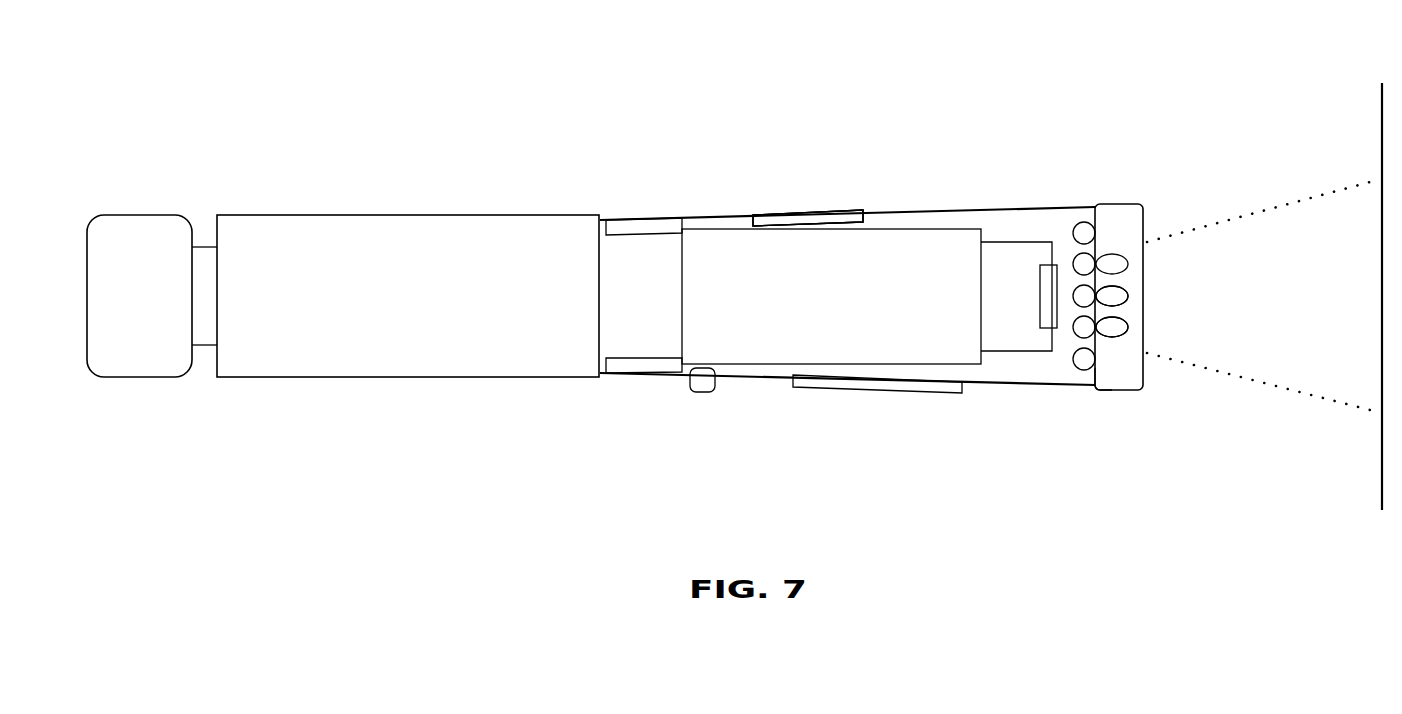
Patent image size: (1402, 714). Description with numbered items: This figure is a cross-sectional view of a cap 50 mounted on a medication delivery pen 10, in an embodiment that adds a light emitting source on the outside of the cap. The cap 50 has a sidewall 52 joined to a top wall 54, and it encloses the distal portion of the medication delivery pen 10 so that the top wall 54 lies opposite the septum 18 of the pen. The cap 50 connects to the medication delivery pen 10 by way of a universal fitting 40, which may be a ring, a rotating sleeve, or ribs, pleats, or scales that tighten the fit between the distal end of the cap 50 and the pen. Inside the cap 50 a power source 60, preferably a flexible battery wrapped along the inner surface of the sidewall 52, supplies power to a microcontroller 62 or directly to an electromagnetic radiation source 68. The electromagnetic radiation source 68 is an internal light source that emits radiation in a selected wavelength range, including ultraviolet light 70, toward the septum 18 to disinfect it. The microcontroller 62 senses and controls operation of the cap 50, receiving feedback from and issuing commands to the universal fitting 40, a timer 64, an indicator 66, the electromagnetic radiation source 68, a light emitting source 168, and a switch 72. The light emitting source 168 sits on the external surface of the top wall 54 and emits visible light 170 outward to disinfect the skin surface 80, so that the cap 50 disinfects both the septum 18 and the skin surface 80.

The medication delivery pen 10 is at (314, 110).
The septum 18 is at (1050, 283).
The universal fitting 40 is at (660, 223).
The cap 50 is at (1110, 382).
The sidewall 52 is at (1052, 388).
The top wall 54 is at (1107, 357).
The power source 60 is at (798, 220).
The microcontroller 62 is at (808, 218).
The timer 64 is at (808, 218).
The indicator 66 is at (862, 385).
The electromagnetic radiation source 68 is at (1088, 293).
The ultraviolet (UV) light 70 is at (1112, 311).
The switch 72 is at (700, 383).
The skin surface 80 is at (1382, 108).
The light emitting source 168 is at (1117, 265).
The visible light 170 is at (1318, 200).